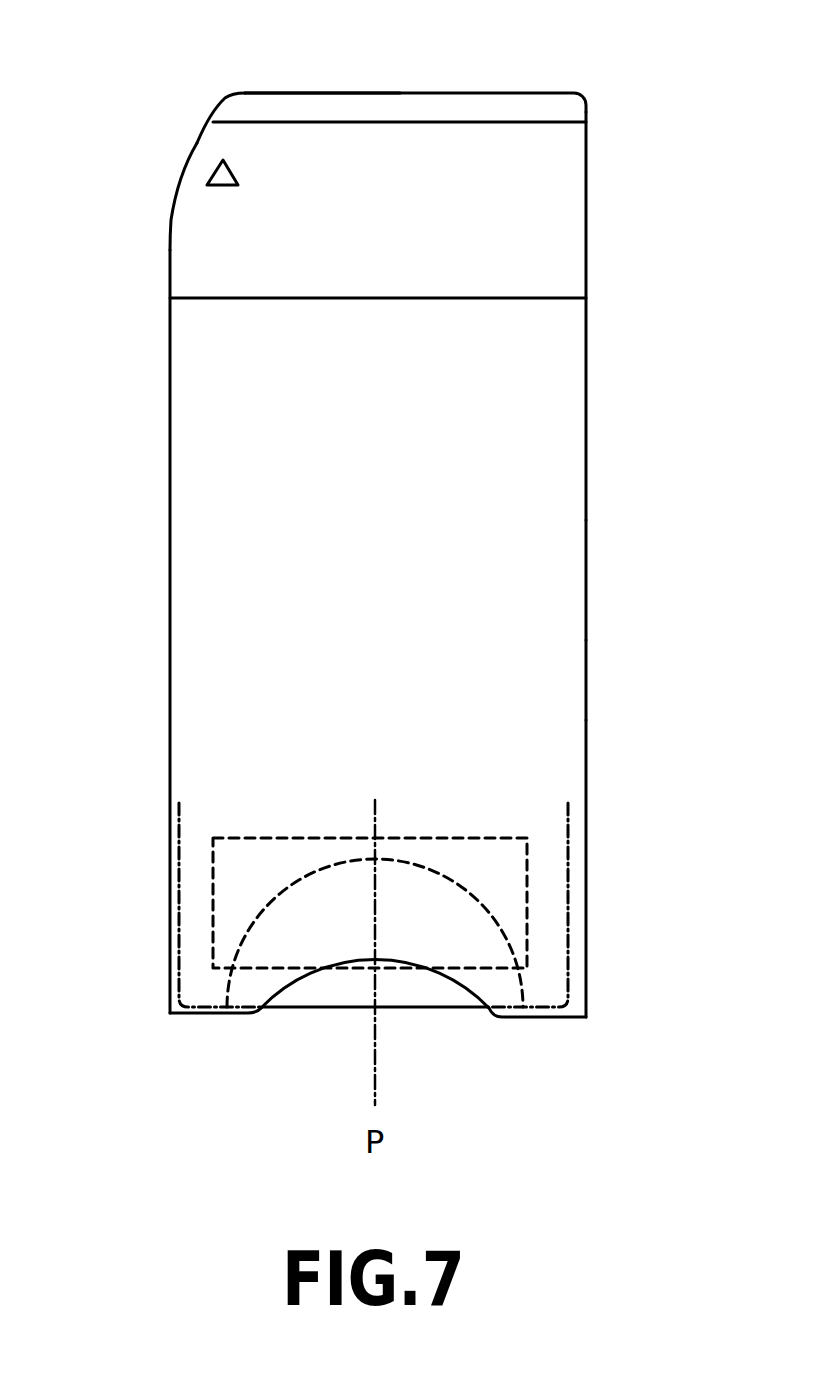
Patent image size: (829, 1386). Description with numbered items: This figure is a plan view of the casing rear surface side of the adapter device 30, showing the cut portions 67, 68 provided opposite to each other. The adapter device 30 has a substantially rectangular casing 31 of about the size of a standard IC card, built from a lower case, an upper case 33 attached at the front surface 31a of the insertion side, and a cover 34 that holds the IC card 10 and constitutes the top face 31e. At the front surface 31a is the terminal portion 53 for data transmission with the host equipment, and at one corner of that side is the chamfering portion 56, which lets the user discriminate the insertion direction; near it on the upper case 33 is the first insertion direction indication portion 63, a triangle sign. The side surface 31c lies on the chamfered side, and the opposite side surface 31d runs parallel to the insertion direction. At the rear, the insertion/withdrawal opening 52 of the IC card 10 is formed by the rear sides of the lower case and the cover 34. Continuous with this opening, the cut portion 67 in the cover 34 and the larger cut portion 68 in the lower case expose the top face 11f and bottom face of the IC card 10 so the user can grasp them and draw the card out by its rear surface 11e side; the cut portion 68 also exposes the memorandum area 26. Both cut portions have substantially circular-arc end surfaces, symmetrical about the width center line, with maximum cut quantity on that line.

The adapter device 30 is at (529, 70).
The front surface 31a is at (318, 91).
The terminal portion 53 is at (446, 89).
The chamfering portion 56 is at (196, 141).
The first insertion direction indication portion 63 is at (207, 182).
The upper case 33 is at (185, 242).
The side surface 31d is at (588, 500).
The top face 31e is at (565, 607).
The casing 31 is at (570, 688).
The cover 34 is at (570, 773).
The side surface 31c is at (169, 677).
The insertion/withdrawal opening 52 is at (208, 1015).
The cut portion 67 is at (435, 978).
The rear surface 11e is at (458, 1009).
The top face 11f is at (319, 994).
The IC card 10 is at (575, 1017).
The memorandum area 26 is at (245, 845).
The cut portion 68 is at (400, 835).